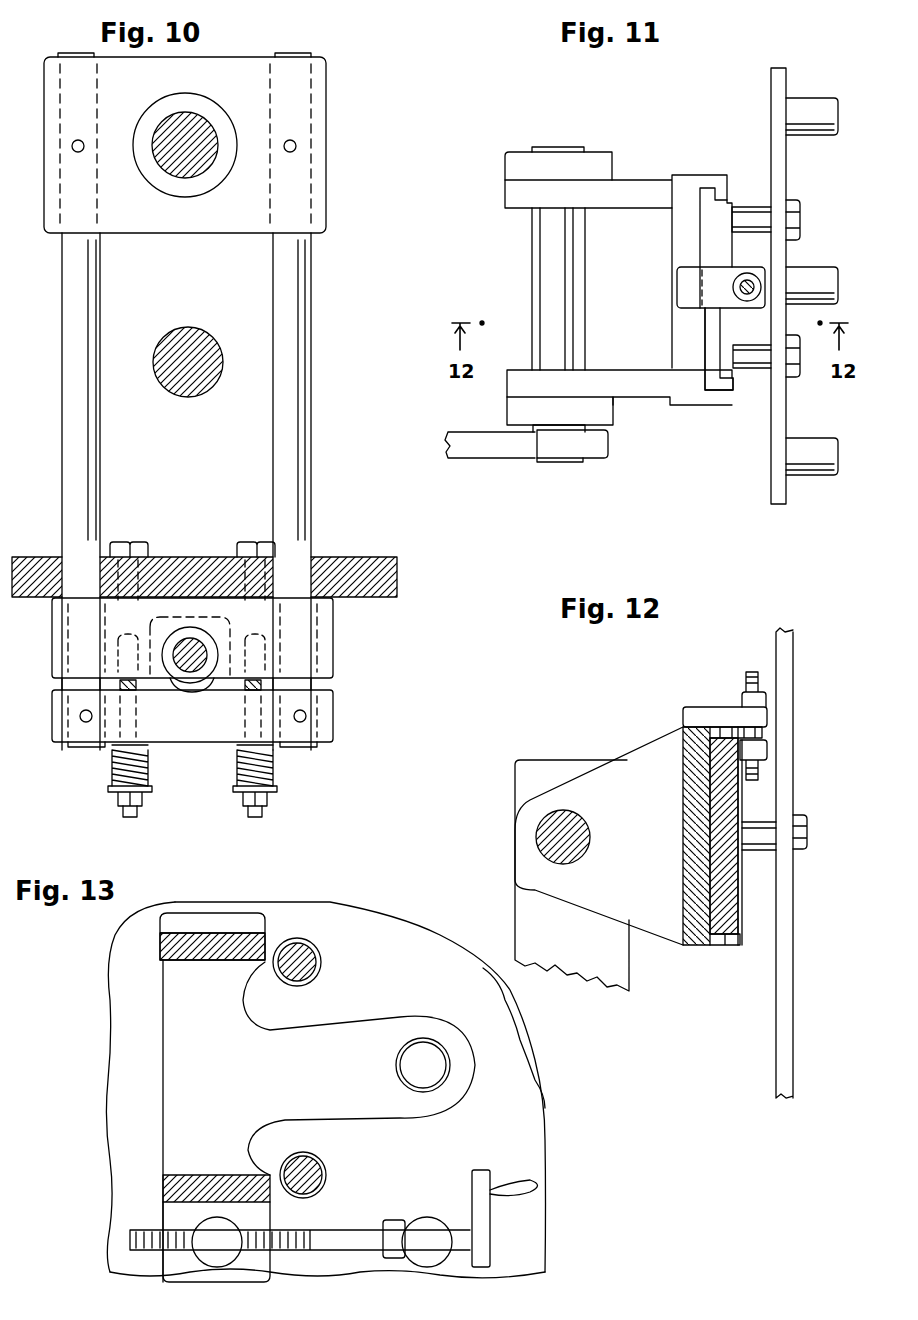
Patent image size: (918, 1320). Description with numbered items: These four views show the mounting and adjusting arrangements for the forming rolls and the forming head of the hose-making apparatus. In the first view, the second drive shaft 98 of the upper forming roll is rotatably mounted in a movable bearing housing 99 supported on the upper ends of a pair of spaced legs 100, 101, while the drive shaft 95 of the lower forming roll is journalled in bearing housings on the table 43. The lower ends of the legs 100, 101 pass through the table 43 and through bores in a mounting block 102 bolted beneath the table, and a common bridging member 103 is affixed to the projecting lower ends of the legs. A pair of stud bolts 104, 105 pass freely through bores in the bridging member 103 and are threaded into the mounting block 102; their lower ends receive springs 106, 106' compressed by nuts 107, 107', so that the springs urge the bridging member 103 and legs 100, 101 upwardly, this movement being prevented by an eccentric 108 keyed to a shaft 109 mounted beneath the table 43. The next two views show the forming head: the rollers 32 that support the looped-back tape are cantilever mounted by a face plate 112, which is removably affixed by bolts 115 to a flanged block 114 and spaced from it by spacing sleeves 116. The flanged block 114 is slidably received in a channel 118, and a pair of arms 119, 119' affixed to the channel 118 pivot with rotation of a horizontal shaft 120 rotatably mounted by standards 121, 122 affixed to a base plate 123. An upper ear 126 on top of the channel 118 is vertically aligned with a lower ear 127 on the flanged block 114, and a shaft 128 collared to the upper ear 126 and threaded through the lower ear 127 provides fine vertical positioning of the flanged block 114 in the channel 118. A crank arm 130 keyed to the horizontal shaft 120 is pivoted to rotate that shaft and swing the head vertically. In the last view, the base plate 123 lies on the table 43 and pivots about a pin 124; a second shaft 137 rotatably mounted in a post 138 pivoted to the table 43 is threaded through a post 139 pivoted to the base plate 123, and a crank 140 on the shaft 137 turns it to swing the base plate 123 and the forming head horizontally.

In FIG. 10, the movable bearing housing 99 is at (238, 62).
In FIG. 10, the second drive shaft 98 is at (170, 125).
In FIG. 10, the leg 100 is at (70, 365).
In FIG. 13, the leg 100 is at (308, 1160).
In FIG. 10, the leg 101 is at (298, 365).
In FIG. 13, the leg 101 is at (302, 952).
In FIG. 10, the drive shaft 95 is at (180, 342).
In FIG. 10, the table 43 is at (355, 560).
In FIG. 13, the table 43 is at (118, 1070).
In FIG. 10, the mounting block 102 is at (327, 632).
In FIG. 10, the shaft 109 is at (190, 650).
In FIG. 10, the eccentric 108 is at (195, 690).
In FIG. 10, the bridging member 103 is at (322, 708).
In FIG. 10, the spring 106 is at (104, 765).
In FIG. 10, the spring 106' is at (286, 765).
In FIG. 10, the nut 107 is at (105, 797).
In FIG. 10, the nut 107' is at (283, 795).
In FIG. 10, the stud bolt 104 is at (123, 813).
In FIG. 10, the stud bolt 105 is at (262, 812).
In FIG. 11, the face plate 112 is at (770, 100).
In FIG. 12, the face plate 112 is at (787, 672).
In FIG. 11, the roller 32 is at (812, 100).
In FIG. 11, the standard 121 is at (518, 158).
In FIG. 12, the standard 121 is at (522, 906).
In FIG. 13, the standard 121 is at (172, 947).
In FIG. 11, the arm 119 is at (618, 205).
In FIG. 12, the arm 119 is at (599, 833).
In FIG. 11, the arm 119' is at (619, 406).
In FIG. 11, the channel 118 is at (684, 240).
In FIG. 12, the channel 118 is at (692, 822).
In FIG. 11, the horizontal shaft 120 is at (534, 258).
In FIG. 12, the horizontal shaft 120 is at (578, 852).
In FIG. 11, the upper ear 126 is at (686, 290).
In FIG. 12, the upper ear 126 is at (705, 714).
In FIG. 11, the shaft 128 is at (747, 282).
In FIG. 12, the shaft 128 is at (740, 680).
In FIG. 11, the flanged block 114 is at (722, 326).
In FIG. 12, the flanged block 114 is at (738, 910).
In FIG. 11, the spacing sleeve 116 is at (742, 212).
In FIG. 12, the spacing sleeve 116 is at (764, 848).
In FIG. 11, the bolt 115 is at (793, 210).
In FIG. 12, the bolt 115 is at (802, 835).
In FIG. 11, the standard 122 is at (516, 415).
In FIG. 13, the standard 122 is at (176, 1188).
In FIG. 11, the crank arm 130 is at (515, 454).
In FIG. 12, the lower ear 127 is at (760, 778).
In FIG. 13, the base plate 123 is at (319, 1121).
In FIG. 13, the pin 124 is at (412, 1056).
In FIG. 13, the second shaft 137 is at (335, 1240).
In FIG. 13, the post 138 is at (422, 1228).
In FIG. 13, the post 139 is at (205, 1228).
In FIG. 13, the crank 140 is at (474, 1188).